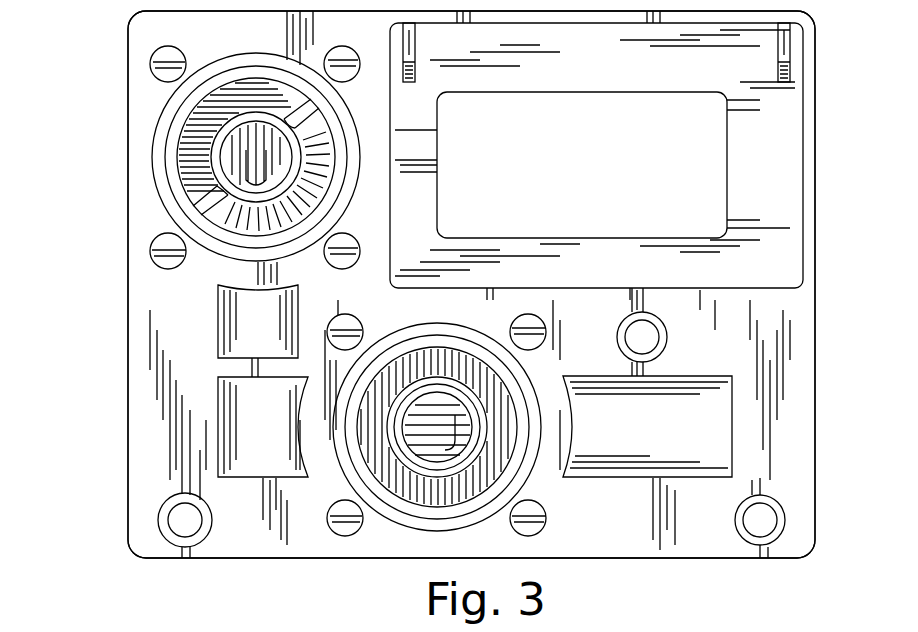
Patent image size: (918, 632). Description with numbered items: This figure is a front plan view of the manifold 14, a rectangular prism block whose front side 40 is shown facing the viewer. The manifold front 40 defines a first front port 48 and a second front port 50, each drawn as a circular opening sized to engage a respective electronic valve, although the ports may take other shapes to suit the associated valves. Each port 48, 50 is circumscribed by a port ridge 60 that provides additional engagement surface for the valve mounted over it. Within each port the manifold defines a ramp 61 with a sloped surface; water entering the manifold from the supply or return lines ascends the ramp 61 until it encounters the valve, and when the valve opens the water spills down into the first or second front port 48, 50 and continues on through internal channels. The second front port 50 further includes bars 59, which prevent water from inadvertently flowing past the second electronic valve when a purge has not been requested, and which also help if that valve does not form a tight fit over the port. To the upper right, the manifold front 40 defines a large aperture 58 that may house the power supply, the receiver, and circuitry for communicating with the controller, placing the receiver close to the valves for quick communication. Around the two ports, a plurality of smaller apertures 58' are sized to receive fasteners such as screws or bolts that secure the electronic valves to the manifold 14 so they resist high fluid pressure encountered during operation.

The manifold 14 is at (43, 66).
The front side 40 is at (142, 447).
The first front port 48 is at (425, 403).
The second front port 50 is at (245, 135).
The aperture 58 is at (596, 155).
The apertures 58' is at (346, 303).
The bars 59 is at (305, 122).
The port ridge 60 is at (293, 182).
The ramp 61 is at (255, 83).